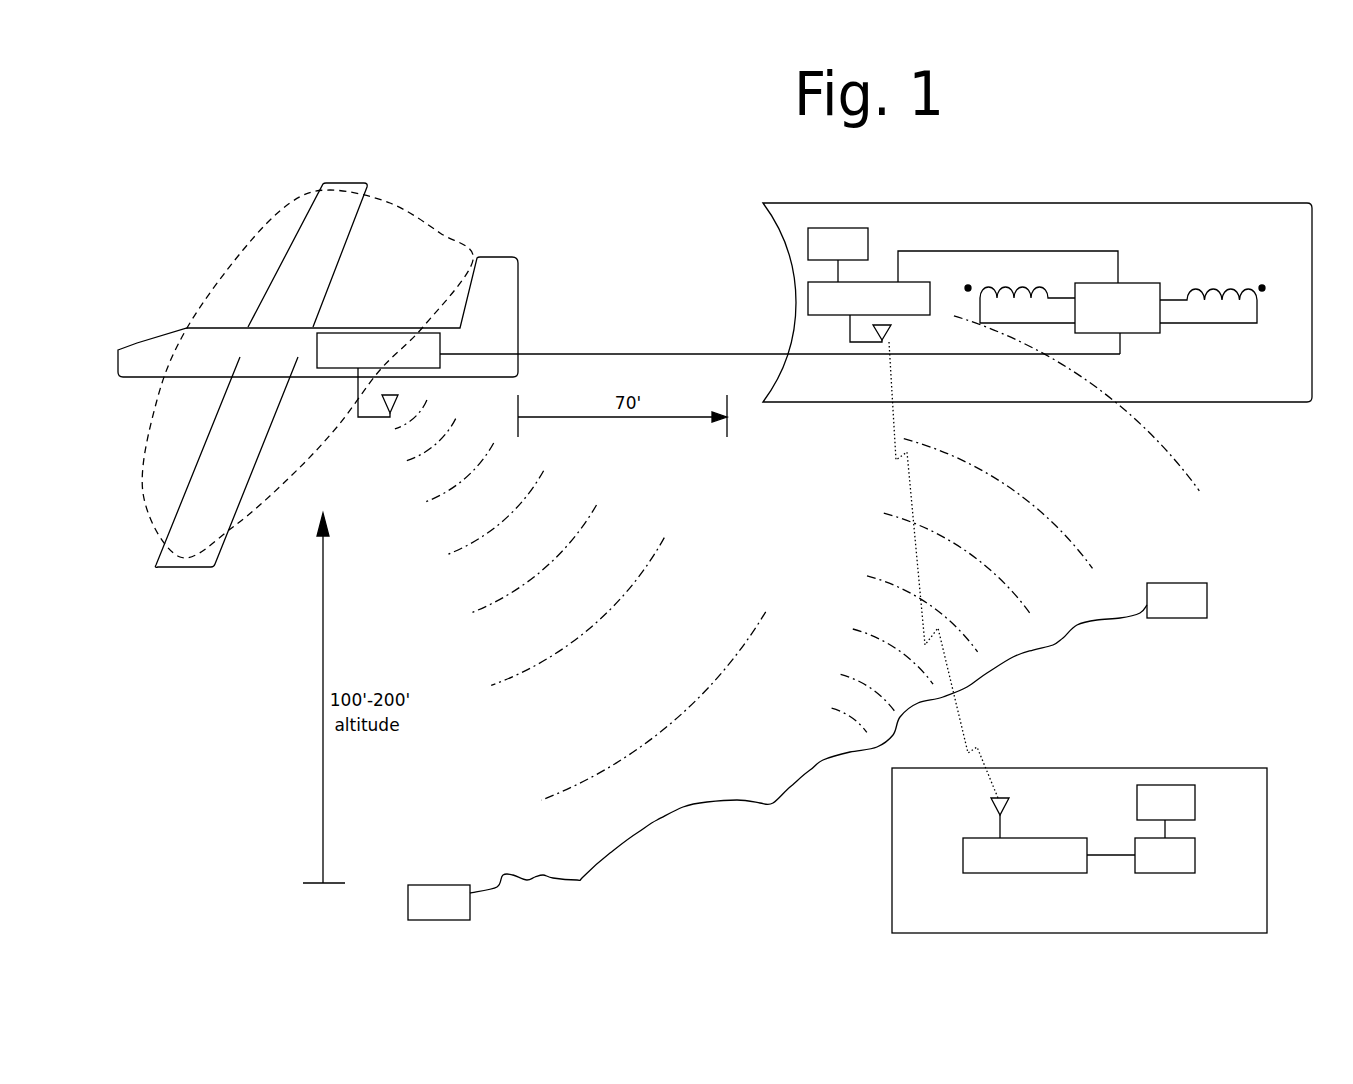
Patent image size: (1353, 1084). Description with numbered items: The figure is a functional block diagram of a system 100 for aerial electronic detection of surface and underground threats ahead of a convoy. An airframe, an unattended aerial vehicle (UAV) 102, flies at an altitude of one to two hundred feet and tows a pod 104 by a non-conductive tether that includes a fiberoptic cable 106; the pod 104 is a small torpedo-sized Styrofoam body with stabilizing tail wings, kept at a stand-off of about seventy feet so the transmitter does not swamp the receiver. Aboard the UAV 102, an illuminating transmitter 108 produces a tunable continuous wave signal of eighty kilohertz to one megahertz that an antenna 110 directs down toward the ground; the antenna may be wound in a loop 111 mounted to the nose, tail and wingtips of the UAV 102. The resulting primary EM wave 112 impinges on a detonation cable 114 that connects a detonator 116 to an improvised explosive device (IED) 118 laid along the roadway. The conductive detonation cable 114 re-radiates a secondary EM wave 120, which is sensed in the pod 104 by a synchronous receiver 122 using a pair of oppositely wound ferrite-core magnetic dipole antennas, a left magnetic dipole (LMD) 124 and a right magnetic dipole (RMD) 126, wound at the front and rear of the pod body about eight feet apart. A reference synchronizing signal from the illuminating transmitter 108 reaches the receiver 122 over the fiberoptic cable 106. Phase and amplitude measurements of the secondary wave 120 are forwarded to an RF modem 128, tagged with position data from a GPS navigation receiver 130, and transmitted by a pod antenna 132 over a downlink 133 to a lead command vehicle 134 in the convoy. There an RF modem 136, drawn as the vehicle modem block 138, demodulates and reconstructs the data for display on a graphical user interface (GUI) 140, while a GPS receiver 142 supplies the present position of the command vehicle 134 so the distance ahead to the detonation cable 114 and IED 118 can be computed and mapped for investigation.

The system 100 is at (497, 115).
The unattended aerial vehicle (UAV) 102 is at (137, 340).
The pod 104 is at (737, 258).
The fiberoptic cable 106 is at (708, 352).
The illuminating transmitter 108 is at (405, 333).
The antenna 110 is at (377, 423).
The loop 111 is at (247, 233).
The primary EM wave 112 is at (510, 571).
The detonation cable 114 is at (655, 828).
The detonator 116 is at (447, 885).
The improvised explosive device (IED) 118 is at (1207, 600).
The secondary EM wave 120 is at (977, 519).
The synchronous receiver 122 is at (1133, 281).
The left magnetic dipole (LMD) 124 is at (1018, 285).
The right magnetic dipole (RMD) 126 is at (1250, 282).
The RF modem 128 is at (808, 288).
The GPS navigation receiver 130 is at (808, 238).
The pod antenna 132 is at (892, 331).
The downlink 133 is at (893, 449).
The lead command vehicle 134 is at (1163, 767).
The RF modem 136 is at (1008, 805).
The ground vehicle RF modem 138 is at (963, 866).
The graphical user interface (GUI) 140 is at (1195, 855).
The GPS receiver 142 is at (1137, 797).